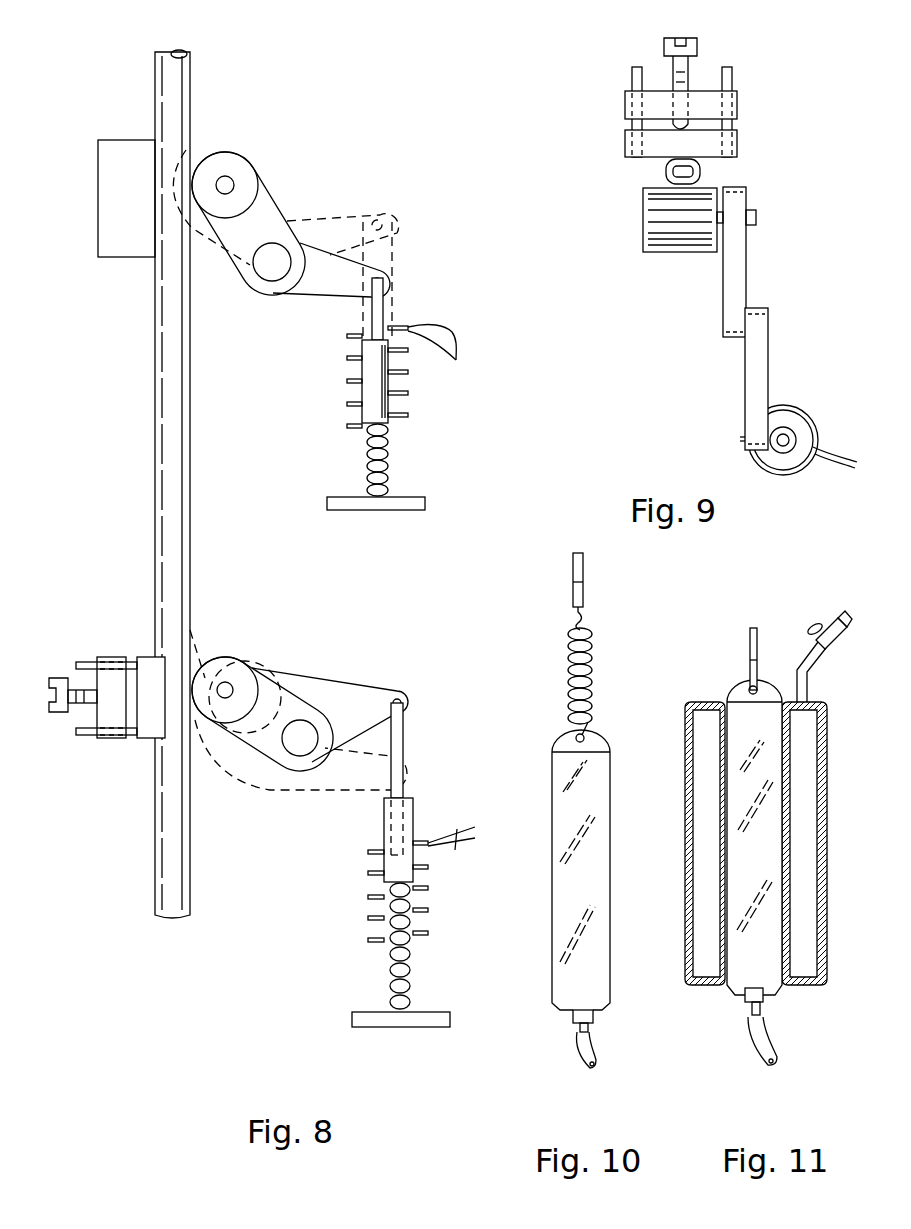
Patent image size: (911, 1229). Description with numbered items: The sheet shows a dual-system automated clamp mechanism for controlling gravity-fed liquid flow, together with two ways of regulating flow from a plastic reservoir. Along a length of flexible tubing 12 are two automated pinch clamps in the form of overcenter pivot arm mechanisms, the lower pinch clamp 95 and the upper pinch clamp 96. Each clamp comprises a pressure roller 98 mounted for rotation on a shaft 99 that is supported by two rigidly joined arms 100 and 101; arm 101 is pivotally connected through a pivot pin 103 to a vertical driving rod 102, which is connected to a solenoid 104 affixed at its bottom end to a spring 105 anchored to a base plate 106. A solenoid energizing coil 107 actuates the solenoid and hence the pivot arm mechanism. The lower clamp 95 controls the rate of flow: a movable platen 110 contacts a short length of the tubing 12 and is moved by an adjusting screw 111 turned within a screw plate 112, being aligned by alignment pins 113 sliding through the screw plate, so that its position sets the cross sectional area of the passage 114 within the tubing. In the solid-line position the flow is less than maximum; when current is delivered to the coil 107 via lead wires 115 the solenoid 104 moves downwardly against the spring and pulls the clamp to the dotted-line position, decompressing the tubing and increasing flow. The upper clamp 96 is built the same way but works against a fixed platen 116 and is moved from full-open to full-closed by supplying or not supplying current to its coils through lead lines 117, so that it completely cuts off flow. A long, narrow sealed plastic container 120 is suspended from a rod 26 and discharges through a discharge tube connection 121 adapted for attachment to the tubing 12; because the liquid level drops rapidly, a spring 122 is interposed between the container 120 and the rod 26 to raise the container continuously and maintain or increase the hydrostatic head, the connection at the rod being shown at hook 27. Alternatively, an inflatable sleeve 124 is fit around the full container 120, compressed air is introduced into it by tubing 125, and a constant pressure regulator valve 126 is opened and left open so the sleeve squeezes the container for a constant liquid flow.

In FIG. 8, the tubing 12 is at (191, 507).
In FIG. 9, the tubing 12 is at (672, 176).
In FIG. 10, the tubing 12 is at (593, 1055).
In FIG. 11, the tubing 12 is at (770, 1040).
In FIG. 10, the rod 26 is at (583, 574).
In FIG. 11, the rod 26 is at (750, 638).
In FIG. 10, the hook 27 is at (585, 604).
In FIG. 11, the hook 27 is at (750, 672).
In FIG. 8, the lower automated pinch clamp 95 is at (290, 687).
In FIG. 8, the upper overcenter pivot arm clamp 96 is at (287, 212).
In FIG. 8, the pressure roller 98 is at (218, 160).
In FIG. 9, the pressure roller 98 is at (712, 194).
In FIG. 8, the shaft 99 is at (236, 179).
In FIG. 9, the shaft 99 is at (755, 219).
In FIG. 8, the arm 100 is at (238, 252).
In FIG. 9, the arm 100 is at (738, 268).
In FIG. 8, the arm 101 is at (308, 284).
In FIG. 9, the arm 101 is at (758, 332).
In FIG. 8, the vertical driving rod 102 is at (378, 312).
In FIG. 9, the vertical driving rod 102 is at (789, 430).
In FIG. 8, the pivot pin 103 is at (381, 279).
In FIG. 9, the pivot pin 103 is at (784, 434).
In FIG. 8, the solenoid 104 is at (368, 350).
In FIG. 9, the solenoid 104 is at (803, 425).
In FIG. 8, the spring 105 is at (392, 463).
In FIG. 8, the base plate 106 is at (425, 503).
In FIG. 8, the solenoid energizing coil 107 is at (350, 381).
In FIG. 8, the movable platen 110 is at (152, 712).
In FIG. 9, the movable platen 110 is at (737, 144).
In FIG. 8, the adjusting screw 111 is at (60, 678).
In FIG. 9, the adjusting screw 111 is at (700, 47).
In FIG. 8, the screw plate 112 is at (107, 670).
In FIG. 9, the screw plate 112 is at (737, 104).
In FIG. 8, the alignment pins 113 is at (82, 736).
In FIG. 9, the alignment pins 113 is at (732, 73).
In FIG. 9, the passage 114 is at (605, 197).
In FIG. 8, the lead wires 115 is at (452, 850).
In FIG. 8, the platen 116 is at (118, 215).
In FIG. 8, the lead lines 117 is at (440, 354).
In FIG. 10, the container 120 is at (590, 798).
In FIG. 11, the container 120 is at (782, 840).
In FIG. 10, the discharge tube connection 121 is at (595, 1018).
In FIG. 11, the discharge tube connection 121 is at (765, 1003).
In FIG. 10, the spring 122 is at (593, 665).
In FIG. 11, the inflatable sleeve 124 is at (808, 786).
In FIG. 11, the tubing 125 is at (808, 679).
In FIG. 11, the constant pressure regulator valve 126 is at (813, 626).